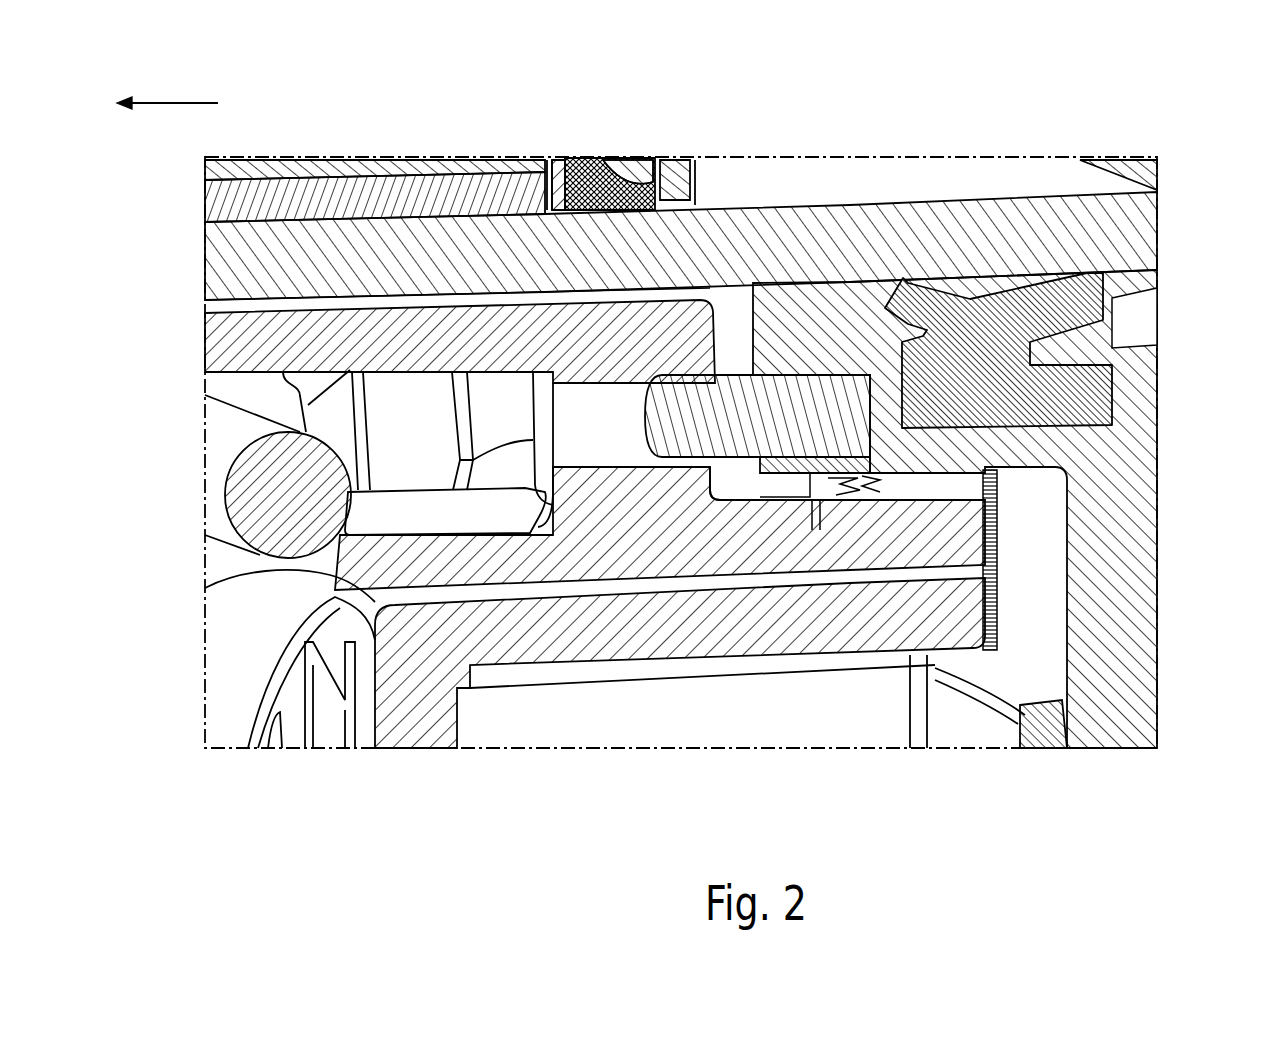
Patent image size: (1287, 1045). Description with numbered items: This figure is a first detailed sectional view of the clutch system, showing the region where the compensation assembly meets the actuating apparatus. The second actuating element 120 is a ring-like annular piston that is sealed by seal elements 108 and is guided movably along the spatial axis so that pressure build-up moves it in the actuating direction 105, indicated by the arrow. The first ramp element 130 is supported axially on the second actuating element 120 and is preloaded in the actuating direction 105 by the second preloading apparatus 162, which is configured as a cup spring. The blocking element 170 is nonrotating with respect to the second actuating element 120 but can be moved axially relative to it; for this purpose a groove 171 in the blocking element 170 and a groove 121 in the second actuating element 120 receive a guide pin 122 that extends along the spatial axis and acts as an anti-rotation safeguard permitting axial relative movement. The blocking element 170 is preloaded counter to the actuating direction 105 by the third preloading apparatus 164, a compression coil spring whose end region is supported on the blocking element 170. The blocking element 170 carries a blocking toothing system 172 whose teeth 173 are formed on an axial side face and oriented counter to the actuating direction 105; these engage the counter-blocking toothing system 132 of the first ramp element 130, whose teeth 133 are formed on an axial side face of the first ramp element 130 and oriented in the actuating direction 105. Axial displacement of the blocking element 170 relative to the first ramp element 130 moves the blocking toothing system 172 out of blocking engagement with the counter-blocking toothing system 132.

The actuating direction 105 is at (170, 103).
The seal element 108 is at (1120, 288).
The second actuating element 120 is at (1118, 622).
The groove 121 is at (840, 475).
The guide pin 122 is at (700, 370).
The first ramp element 130 is at (437, 672).
The counter-blocking toothing system 132 is at (870, 470).
The teeth 133 is at (855, 490).
The second preloading apparatus 162 is at (997, 650).
The third preloading apparatus 164 is at (258, 498).
The blocking element 170 is at (262, 340).
The groove 171 is at (588, 418).
The blocking toothing system 172 is at (820, 490).
The teeth 173 is at (815, 505).